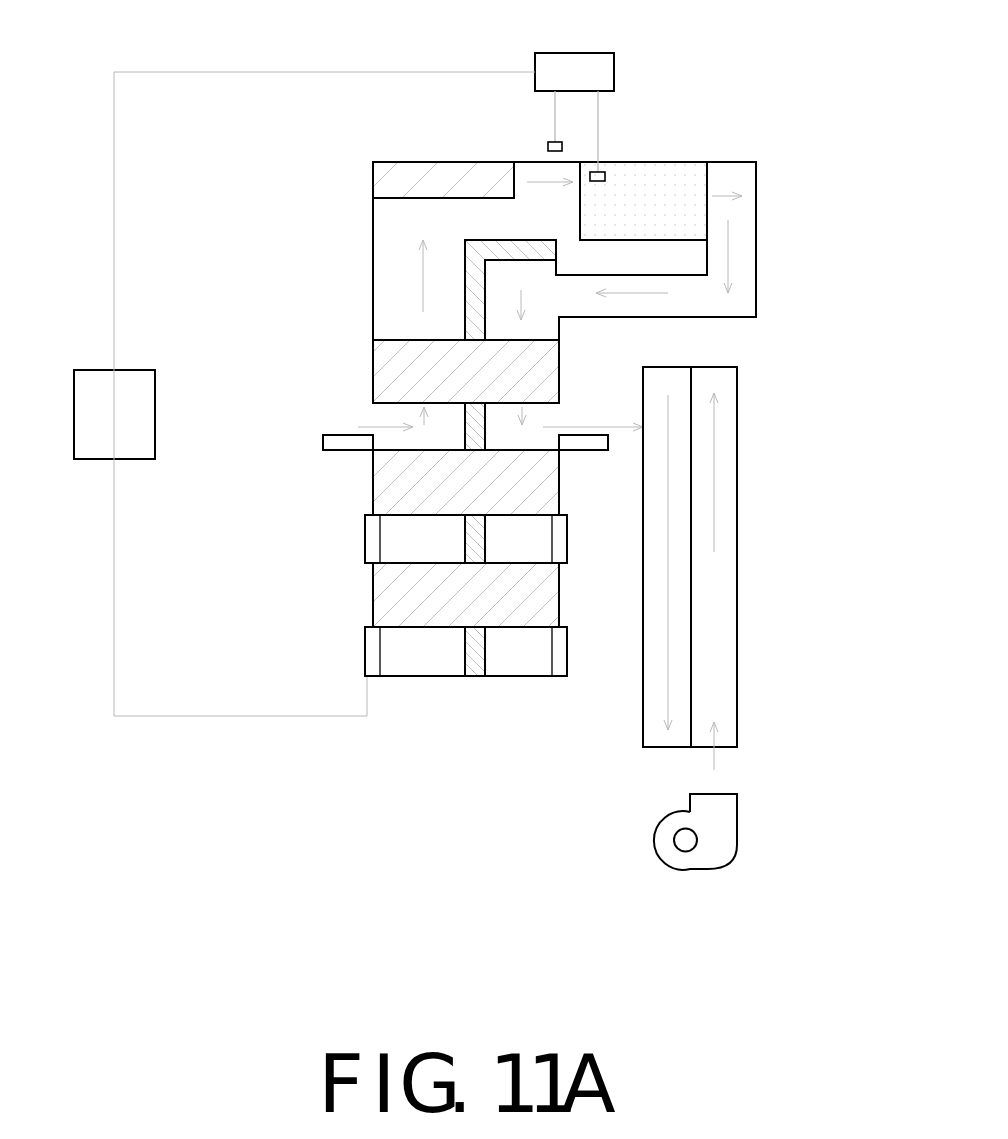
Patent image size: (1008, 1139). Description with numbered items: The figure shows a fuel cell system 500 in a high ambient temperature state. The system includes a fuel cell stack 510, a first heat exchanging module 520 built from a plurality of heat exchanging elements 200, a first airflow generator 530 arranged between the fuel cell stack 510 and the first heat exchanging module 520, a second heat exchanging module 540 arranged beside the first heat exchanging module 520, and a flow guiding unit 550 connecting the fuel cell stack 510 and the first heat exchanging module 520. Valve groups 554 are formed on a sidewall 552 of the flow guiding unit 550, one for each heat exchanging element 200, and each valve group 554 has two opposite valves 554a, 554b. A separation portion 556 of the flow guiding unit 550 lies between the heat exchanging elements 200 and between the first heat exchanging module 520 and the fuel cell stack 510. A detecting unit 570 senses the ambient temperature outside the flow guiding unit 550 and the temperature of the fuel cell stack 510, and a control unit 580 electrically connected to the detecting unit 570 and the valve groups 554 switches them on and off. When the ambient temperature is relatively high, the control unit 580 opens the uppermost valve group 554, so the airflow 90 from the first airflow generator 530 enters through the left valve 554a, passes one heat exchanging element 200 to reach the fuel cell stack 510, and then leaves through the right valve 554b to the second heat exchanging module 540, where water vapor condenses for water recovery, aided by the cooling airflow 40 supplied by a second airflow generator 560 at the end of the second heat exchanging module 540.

The fuel cell system 500 is at (558, 869).
The fuel cell stack 510 is at (650, 162).
The first heat exchanging module 520 is at (244, 356).
The heat exchanging element 200 is at (373, 390).
The first airflow generator 530 is at (448, 168).
The second heat exchanging module 540 is at (737, 490).
The flow guiding unit 550 is at (756, 300).
The sidewall 552 is at (370, 219).
The valve group 554 is at (525, 742).
The left valve 554a is at (374, 677).
The right valve 554b is at (559, 677).
The separation portion 556 is at (465, 325).
The second airflow generator 560 is at (737, 840).
The detecting unit 570 is at (605, 62).
The control unit 580 is at (74, 415).
The airflow 90 is at (423, 280).
The cooling airflow 40 is at (714, 762).